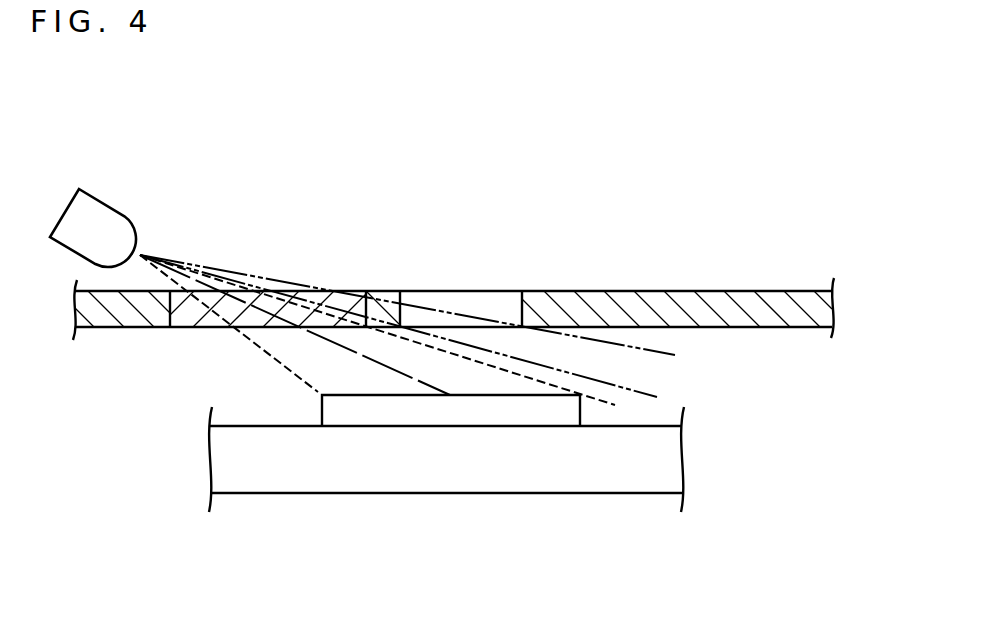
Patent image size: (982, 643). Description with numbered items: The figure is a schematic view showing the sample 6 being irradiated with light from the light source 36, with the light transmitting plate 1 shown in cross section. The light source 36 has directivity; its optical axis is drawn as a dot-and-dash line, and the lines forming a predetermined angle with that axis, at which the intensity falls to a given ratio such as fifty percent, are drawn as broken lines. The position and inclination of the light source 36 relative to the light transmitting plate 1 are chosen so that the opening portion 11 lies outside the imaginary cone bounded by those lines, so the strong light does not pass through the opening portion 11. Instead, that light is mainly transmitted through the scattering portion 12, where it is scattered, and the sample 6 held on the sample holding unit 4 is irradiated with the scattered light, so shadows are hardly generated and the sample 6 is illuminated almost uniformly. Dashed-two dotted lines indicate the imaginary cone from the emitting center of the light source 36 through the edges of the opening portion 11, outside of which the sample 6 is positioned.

The light source 36 is at (100, 207).
The light transmitting plate 1 is at (103, 313).
The scattering portion 12 is at (182, 317).
The opening portion 11 is at (522, 305).
The sample 6 is at (358, 412).
The sample holding unit 4 is at (512, 458).